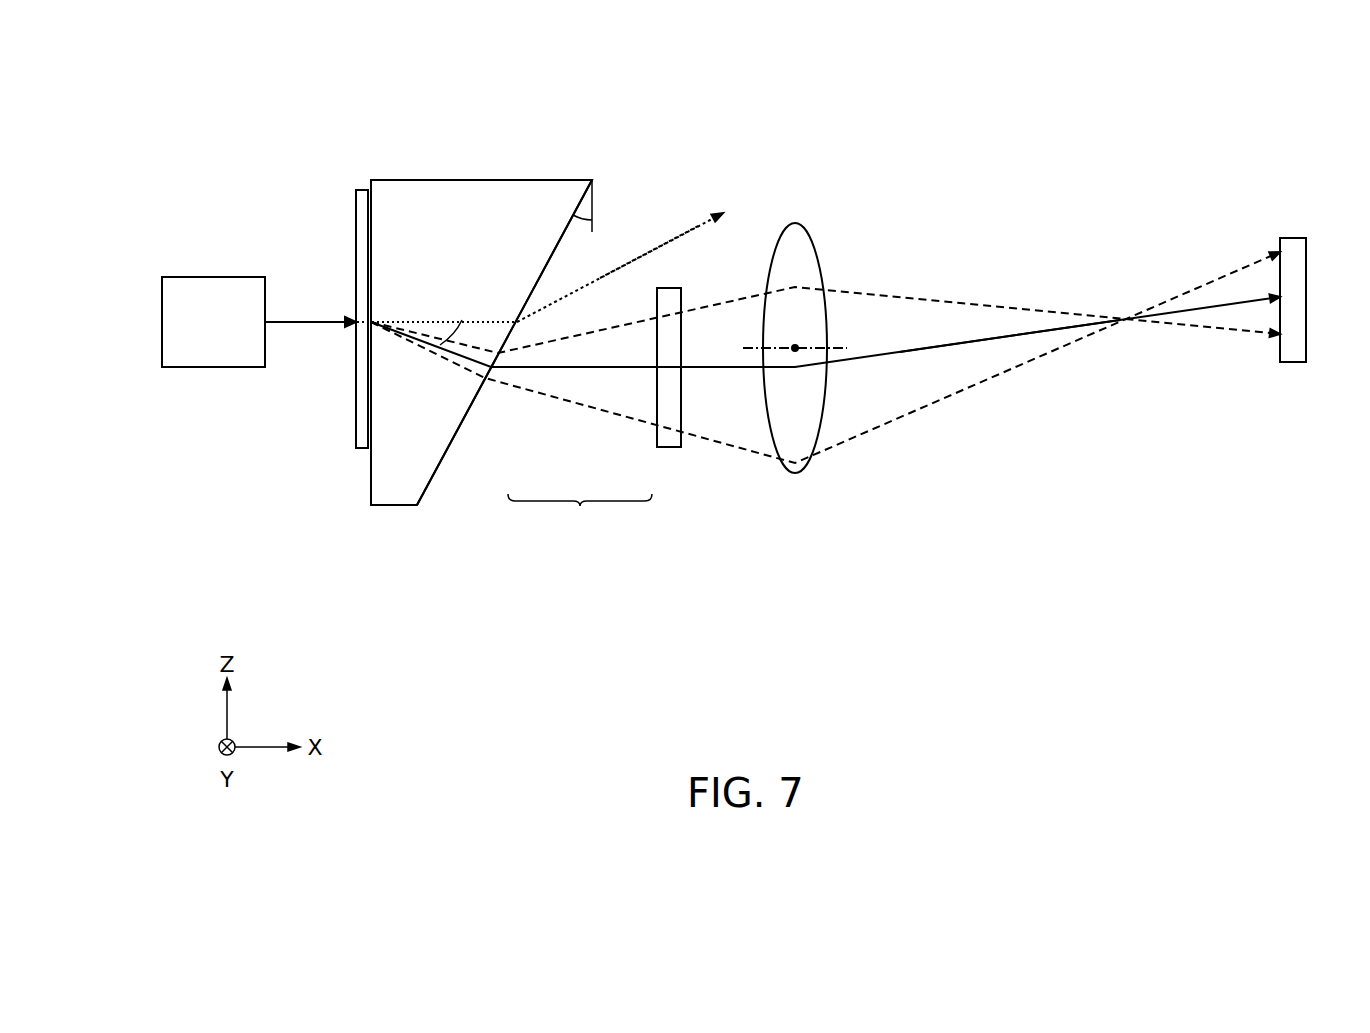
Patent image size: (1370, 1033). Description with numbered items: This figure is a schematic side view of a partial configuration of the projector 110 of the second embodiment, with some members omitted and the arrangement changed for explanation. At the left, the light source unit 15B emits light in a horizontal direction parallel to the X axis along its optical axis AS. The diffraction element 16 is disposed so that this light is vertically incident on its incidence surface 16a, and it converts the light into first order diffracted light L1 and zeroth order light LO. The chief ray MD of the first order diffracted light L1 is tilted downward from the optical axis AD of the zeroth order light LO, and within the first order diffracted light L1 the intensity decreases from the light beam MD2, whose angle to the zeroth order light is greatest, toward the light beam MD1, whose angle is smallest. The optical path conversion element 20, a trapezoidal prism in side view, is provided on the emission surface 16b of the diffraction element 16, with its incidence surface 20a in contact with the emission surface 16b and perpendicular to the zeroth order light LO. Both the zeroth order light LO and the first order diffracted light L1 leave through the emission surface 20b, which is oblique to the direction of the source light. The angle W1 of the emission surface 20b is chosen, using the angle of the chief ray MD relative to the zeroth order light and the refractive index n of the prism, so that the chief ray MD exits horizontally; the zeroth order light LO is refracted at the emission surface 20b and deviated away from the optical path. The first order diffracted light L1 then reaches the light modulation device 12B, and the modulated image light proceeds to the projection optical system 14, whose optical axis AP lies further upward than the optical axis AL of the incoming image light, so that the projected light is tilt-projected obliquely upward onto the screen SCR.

The projector 110 is at (423, 108).
The light source unit 15B is at (178, 362).
The diffraction element 16 is at (363, 190).
The incidence surface 16a is at (356, 440).
The emission surface 16b is at (371, 462).
The optical path conversion element 20 is at (527, 185).
The incidence surface 20a is at (371, 493).
The emission surface 20b is at (438, 467).
The refractive index n is at (514, 237).
The angle of the emission surface W1 is at (597, 226).
The optical axis of the light source unit AS is at (283, 323).
The 0-th order light LO is at (663, 245).
The optical axis of the 0-th order light AD is at (652, 250).
The chief ray of the first order diffracted light MD is at (603, 368).
The light beam MD1 is at (563, 341).
The light beam MD2 is at (623, 416).
The first order diffracted light L1 is at (580, 513).
The light modulation device 12B is at (667, 438).
The projection optical system 14 is at (800, 240).
The optical axis AP is at (845, 347).
The optical axis of the incident image light AL is at (738, 369).
The screen SCR is at (1290, 248).